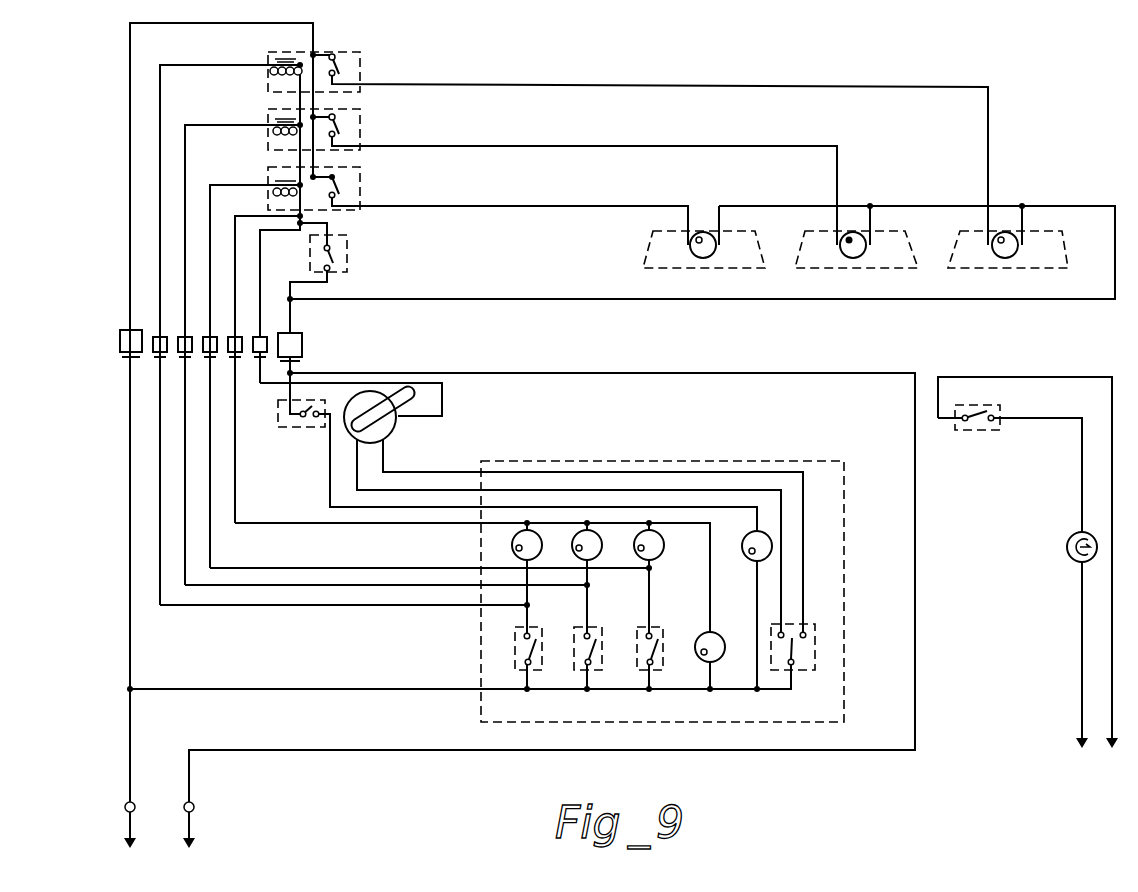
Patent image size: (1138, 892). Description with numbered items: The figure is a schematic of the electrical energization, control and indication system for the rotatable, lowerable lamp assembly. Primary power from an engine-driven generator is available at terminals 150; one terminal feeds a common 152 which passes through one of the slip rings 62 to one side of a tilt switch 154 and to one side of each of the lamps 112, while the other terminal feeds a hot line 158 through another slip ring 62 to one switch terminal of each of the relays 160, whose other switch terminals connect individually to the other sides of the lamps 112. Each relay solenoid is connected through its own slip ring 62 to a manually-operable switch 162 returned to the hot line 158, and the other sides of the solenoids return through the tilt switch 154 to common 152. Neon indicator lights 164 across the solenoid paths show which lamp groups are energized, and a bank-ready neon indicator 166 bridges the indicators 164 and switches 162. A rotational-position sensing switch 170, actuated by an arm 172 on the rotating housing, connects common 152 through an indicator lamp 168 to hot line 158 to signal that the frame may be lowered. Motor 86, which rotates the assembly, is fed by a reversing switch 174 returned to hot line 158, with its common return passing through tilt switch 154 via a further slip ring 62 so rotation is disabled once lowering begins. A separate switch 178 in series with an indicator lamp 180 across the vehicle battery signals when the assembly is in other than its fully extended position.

The slip rings 62 is at (153, 338).
The motor 86 is at (395, 428).
The lamps 112 is at (648, 254).
The terminals 150 is at (185, 803).
The common 152 is at (378, 752).
The tilt switch 154 is at (348, 253).
The hot line 158 is at (128, 722).
The relays 160 is at (360, 63).
The manually-operable switches 162 is at (556, 612).
The neon indicator lights 164 is at (512, 543).
The bank-ready neon indicator 166 is at (738, 622).
The indicator lamp 168 is at (750, 560).
The rotational-position sensing switch 170 is at (312, 428).
The arm 172 is at (390, 393).
The reversing switch 174 is at (816, 640).
The switch 178 is at (975, 433).
The indicator lamp 180 is at (1067, 548).